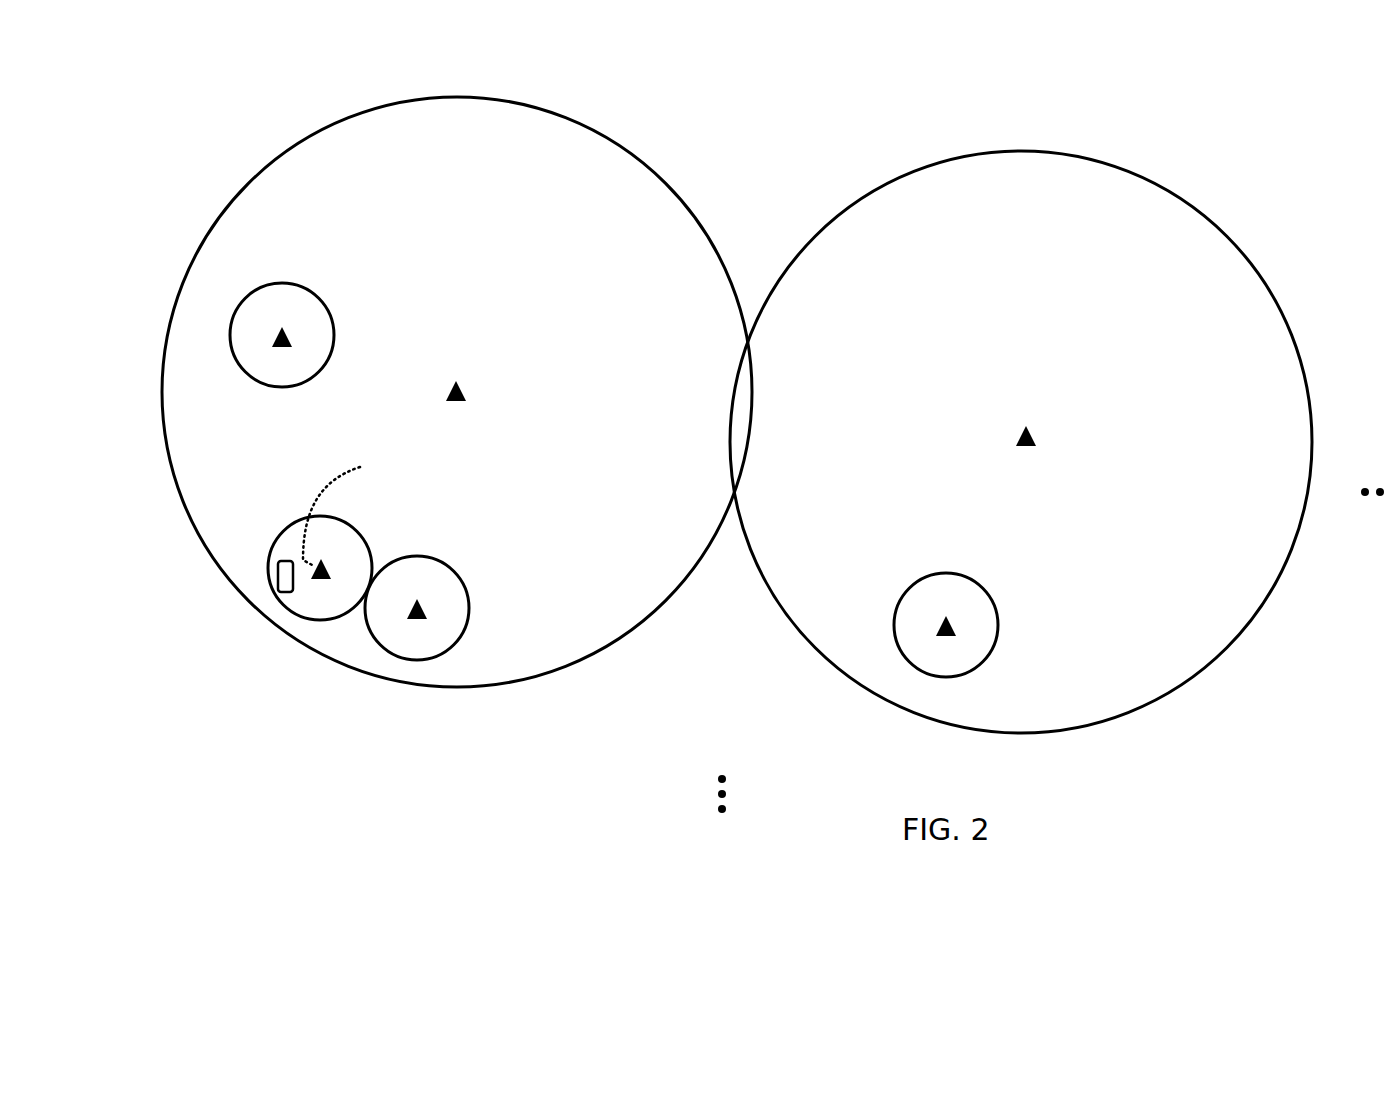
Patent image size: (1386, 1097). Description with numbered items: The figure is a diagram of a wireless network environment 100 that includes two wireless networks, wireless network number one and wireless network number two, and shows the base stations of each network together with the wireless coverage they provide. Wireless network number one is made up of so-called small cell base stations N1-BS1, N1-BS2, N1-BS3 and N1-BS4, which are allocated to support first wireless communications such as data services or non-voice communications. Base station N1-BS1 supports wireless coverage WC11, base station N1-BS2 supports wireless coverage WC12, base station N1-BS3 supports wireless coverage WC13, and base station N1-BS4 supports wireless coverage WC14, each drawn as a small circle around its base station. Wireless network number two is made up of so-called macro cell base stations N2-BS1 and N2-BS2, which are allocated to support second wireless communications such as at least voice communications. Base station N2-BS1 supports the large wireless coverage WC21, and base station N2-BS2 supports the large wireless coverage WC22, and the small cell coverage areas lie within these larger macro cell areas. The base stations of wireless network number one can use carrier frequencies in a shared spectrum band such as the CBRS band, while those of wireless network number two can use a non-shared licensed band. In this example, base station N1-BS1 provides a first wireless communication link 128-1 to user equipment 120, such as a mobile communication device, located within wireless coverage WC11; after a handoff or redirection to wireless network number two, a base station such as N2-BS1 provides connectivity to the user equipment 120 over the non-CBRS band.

The wireless network environment 100 is at (1261, 151).
The user equipment 120 is at (278, 585).
The first wireless communication link 128-1 is at (363, 504).
The wireless coverage WC21 is at (352, 115).
The wireless coverage WC22 is at (922, 165).
The wireless coverage WC11 is at (297, 520).
The wireless coverage WC12 is at (467, 622).
The wireless coverage WC13 is at (258, 290).
The wireless coverage WC14 is at (923, 578).
The base station N1-BS1 is at (333, 570).
The base station N1-BS2 is at (430, 610).
The base station N1-BS3 is at (294, 339).
The base station N1-BS4 is at (958, 627).
The base station N2-BS1 is at (467, 391).
The base station N2-BS2 is at (1037, 437).